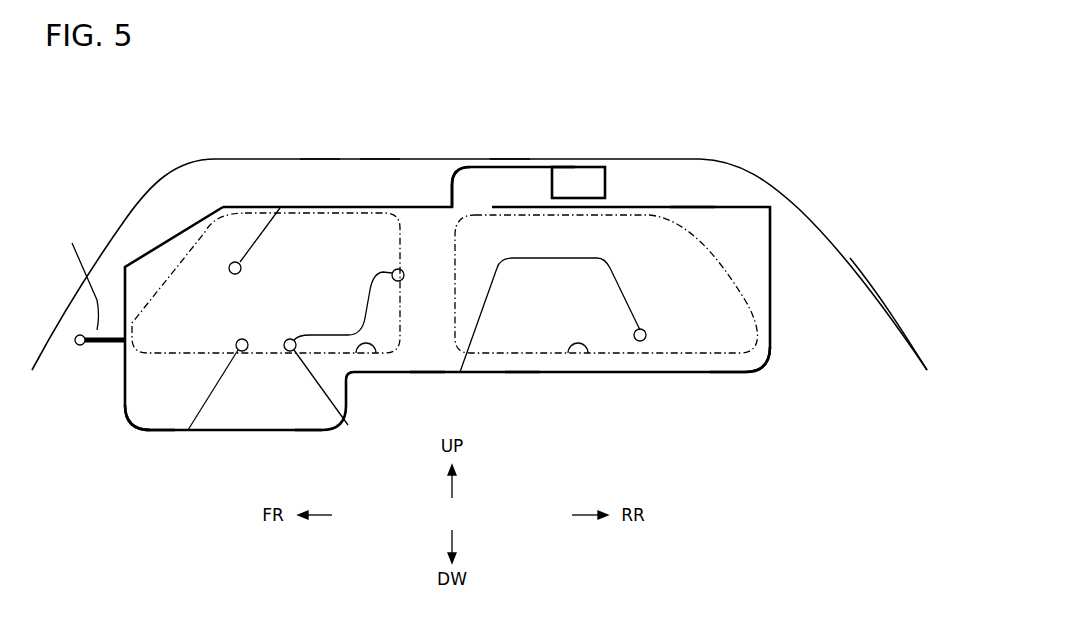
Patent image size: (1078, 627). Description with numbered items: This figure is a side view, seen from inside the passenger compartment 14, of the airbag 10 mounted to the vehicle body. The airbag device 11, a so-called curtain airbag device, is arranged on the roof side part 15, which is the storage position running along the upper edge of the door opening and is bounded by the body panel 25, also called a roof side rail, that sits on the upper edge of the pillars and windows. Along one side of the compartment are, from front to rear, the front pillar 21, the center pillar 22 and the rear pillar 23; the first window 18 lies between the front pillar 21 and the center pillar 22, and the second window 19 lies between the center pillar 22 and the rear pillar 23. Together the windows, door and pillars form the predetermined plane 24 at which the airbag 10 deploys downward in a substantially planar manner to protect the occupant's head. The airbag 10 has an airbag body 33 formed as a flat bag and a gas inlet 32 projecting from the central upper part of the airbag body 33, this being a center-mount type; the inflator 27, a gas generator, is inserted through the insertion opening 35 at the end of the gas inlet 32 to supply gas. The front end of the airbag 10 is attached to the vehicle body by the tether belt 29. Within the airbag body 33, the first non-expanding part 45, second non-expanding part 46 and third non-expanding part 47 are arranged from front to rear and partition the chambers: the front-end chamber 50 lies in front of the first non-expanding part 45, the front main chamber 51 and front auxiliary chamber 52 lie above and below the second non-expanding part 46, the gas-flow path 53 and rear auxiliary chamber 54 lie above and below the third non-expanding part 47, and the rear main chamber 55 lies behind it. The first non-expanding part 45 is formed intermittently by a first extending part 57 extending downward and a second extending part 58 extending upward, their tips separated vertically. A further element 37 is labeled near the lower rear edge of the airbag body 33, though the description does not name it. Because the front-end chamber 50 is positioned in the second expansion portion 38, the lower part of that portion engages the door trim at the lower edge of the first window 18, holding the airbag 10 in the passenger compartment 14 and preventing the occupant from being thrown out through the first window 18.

The airbag 10 is at (155, 248).
The airbag device 11 is at (508, 162).
The passenger compartment 14 is at (638, 395).
The roof side part 15 is at (382, 168).
The first window 18 is at (373, 350).
The second window 19 is at (577, 345).
The front pillar 21 is at (85, 360).
The center pillar 22 is at (423, 340).
The rear pillar 23 is at (810, 337).
The predetermined plane 24 is at (723, 273).
The body panel 25 is at (315, 158).
The inflator 27 is at (590, 167).
The tether belt 29 is at (72, 283).
The gas inlet 32 is at (475, 165).
The airbag body 33 is at (692, 207).
The insertion opening 35 is at (562, 167).
The door bottom rear portion 37 is at (727, 370).
The second expansion portion 38 is at (158, 433).
The first non-expanding part 45 is at (247, 239).
The second non-expanding part 46 is at (343, 398).
The third non-expanding part 47 is at (609, 258).
The front-end chamber 50 is at (137, 413).
The front main chamber 51 is at (338, 232).
The front auxiliary chamber 52 is at (312, 412).
The gas-flow path 53 is at (590, 250).
The rear auxiliary chamber 54 is at (525, 340).
The rear main chamber 55 is at (742, 333).
The first extending part 57 is at (265, 228).
The second extending part 58 is at (200, 412).